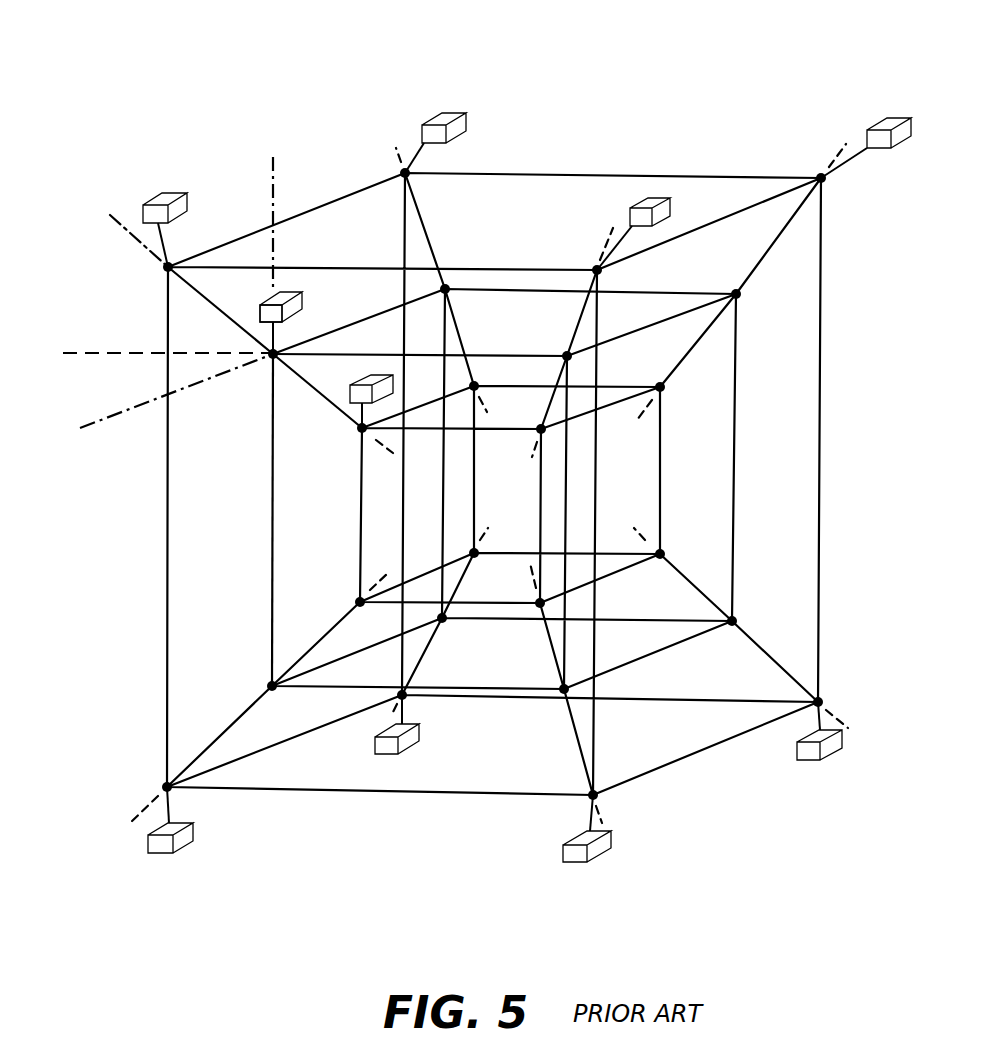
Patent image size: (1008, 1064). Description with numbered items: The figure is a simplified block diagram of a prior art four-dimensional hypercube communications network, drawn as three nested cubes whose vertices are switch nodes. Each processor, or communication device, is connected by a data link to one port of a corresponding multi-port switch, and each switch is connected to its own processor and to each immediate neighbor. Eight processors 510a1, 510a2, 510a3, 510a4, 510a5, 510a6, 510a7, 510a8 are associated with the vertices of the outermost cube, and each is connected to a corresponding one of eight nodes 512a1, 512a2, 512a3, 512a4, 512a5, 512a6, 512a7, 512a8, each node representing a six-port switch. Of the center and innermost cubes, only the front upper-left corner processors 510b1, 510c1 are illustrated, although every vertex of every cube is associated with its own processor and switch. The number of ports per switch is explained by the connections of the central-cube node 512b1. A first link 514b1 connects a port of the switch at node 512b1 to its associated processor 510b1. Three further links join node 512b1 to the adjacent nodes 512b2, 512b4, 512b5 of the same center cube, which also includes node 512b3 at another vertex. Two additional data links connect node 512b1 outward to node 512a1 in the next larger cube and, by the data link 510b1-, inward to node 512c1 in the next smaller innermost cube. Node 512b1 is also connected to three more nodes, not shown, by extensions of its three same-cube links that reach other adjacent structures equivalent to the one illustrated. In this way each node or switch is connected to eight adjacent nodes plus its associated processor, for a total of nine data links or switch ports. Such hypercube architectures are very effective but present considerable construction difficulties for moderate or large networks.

The processor 510a1 is at (163, 203).
The processor 510a2 is at (443, 113).
The processor 510a3 is at (898, 118).
The processor 510a4 is at (662, 198).
The processor 510a5 is at (160, 853).
The processor 510a6 is at (375, 753).
The processor 510a7 is at (822, 760).
The processor 510a8 is at (577, 862).
The node 512a1 is at (168, 267).
The node 512a2 is at (403, 170).
The node 512a3 is at (820, 175).
The node 512a4 is at (595, 265).
The node 512a5 is at (165, 787).
The node 512a6 is at (405, 698).
The node 512a7 is at (820, 702).
The node 512a8 is at (600, 800).
The central-cube node 512b1 is at (270, 358).
The node 512b2 is at (450, 283).
The node 512b3 is at (708, 272).
The node 512b4 is at (572, 356).
The node 512b5 is at (270, 683).
The node 512c1 is at (360, 432).
The processor 510b1 is at (260, 297).
The first link 514b1 is at (287, 330).
The processor 510c1 is at (350, 392).
The data link 510b1- is at (300, 387).